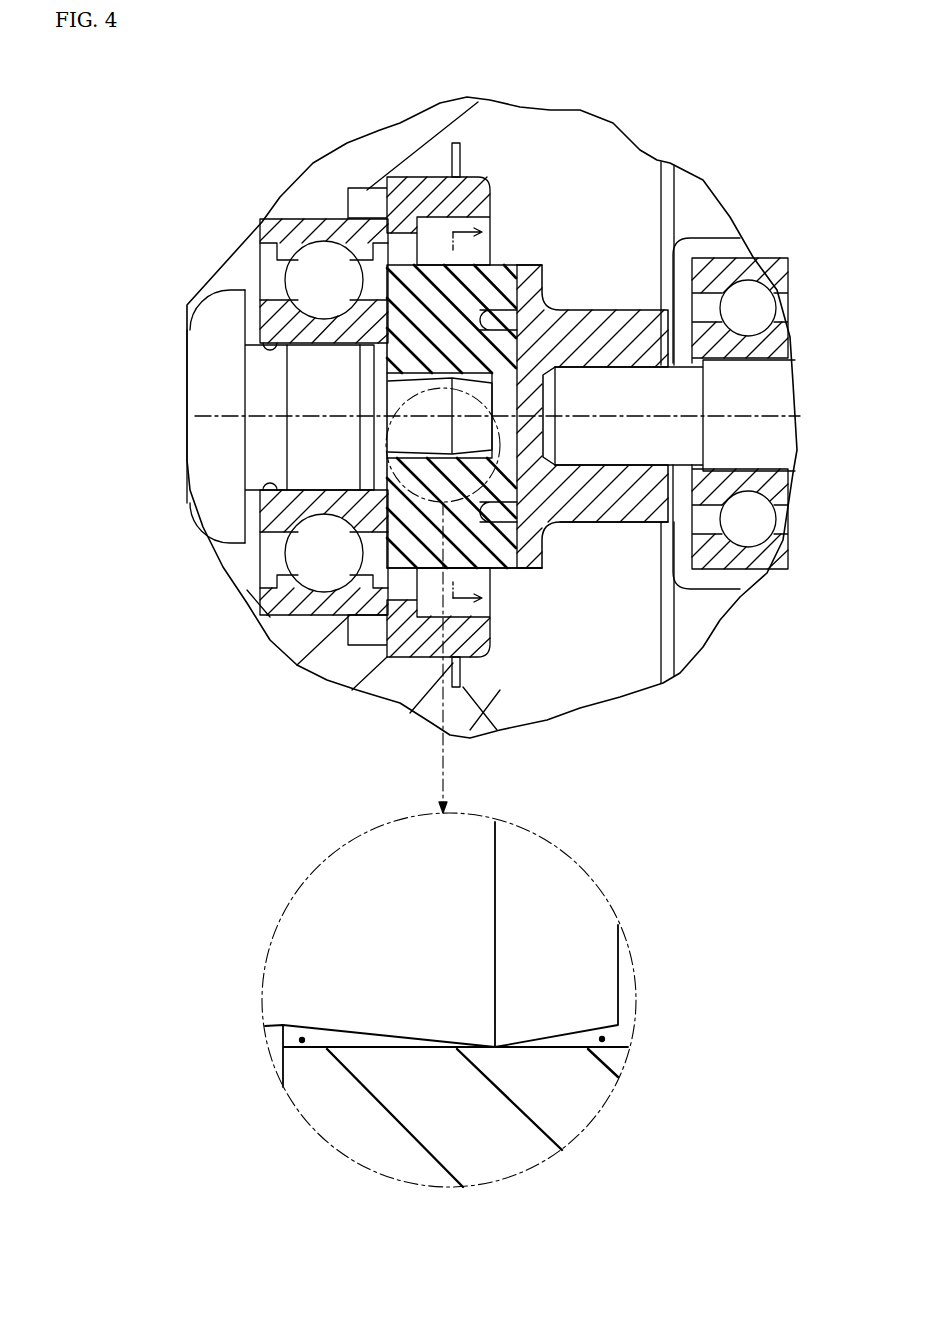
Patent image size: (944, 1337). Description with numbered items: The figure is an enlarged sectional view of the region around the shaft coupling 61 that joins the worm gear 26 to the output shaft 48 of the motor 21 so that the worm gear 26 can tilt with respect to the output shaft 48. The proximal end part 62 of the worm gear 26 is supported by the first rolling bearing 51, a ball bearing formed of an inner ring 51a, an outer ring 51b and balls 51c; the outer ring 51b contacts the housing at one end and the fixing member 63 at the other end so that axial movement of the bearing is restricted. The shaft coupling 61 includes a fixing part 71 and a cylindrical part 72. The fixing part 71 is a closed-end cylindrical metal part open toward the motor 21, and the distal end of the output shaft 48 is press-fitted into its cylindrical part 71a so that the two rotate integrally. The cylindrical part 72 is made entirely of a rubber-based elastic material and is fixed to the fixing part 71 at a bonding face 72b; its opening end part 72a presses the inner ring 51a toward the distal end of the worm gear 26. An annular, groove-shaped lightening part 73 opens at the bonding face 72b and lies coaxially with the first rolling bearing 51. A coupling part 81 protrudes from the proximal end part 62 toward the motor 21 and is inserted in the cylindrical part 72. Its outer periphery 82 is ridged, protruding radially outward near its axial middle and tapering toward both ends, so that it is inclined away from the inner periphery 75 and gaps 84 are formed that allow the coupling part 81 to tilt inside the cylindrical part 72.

The motor 21 is at (722, 238).
The worm gear 26 is at (192, 388).
The output shaft 48 is at (783, 383).
The first rolling bearing 51 is at (192, 170).
The inner ring 51a is at (263, 327).
The outer ring 51b is at (282, 227).
The balls 51c is at (293, 270).
The shaft coupling 61 is at (573, 180).
The proximal end part 62 is at (293, 437).
The fixing member 63 is at (486, 178).
The fixing part 71 is at (620, 310).
The cylindrical part 71a is at (613, 517).
The cylindrical part 72 is at (508, 261).
The opening end part 72a is at (370, 350).
The bonding face 72b is at (527, 547).
The lightening part 73 is at (541, 302).
The inner periphery 75 is at (421, 377).
The coupling part 81 is at (380, 400).
The outer periphery 82 is at (418, 463).
The gaps 84 is at (303, 1044).